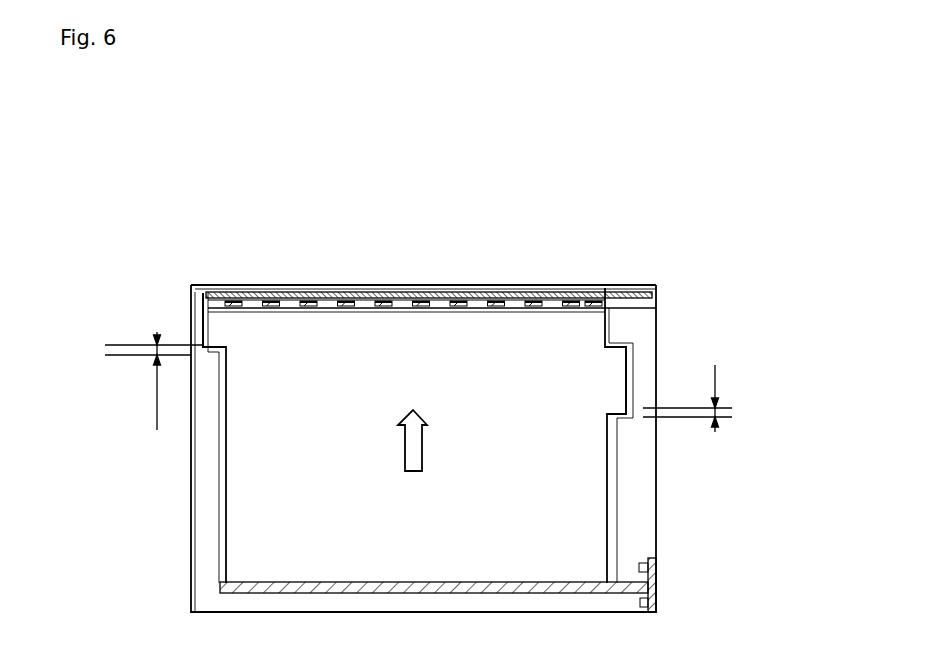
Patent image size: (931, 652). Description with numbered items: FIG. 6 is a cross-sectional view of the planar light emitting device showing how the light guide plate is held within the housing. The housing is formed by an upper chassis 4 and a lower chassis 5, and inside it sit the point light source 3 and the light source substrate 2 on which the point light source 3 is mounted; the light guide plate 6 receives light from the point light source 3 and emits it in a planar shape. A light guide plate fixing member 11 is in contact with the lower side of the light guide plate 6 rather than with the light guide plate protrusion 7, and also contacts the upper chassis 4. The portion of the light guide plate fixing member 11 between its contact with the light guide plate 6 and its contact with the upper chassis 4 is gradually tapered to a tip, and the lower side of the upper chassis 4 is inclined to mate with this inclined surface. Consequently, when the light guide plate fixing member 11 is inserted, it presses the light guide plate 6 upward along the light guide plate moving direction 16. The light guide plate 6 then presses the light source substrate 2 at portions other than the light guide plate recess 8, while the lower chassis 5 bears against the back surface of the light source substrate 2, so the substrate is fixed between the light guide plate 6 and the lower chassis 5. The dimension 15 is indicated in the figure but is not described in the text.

The light source substrate 2 is at (668, 289).
The point light source 3 is at (462, 288).
The upper chassis 4 is at (647, 323).
The lower chassis 5 is at (330, 279).
The light guide plate 6 is at (596, 490).
The light guide plate protrusion 7 is at (204, 321).
The light guide plate recess 8 is at (602, 293).
The light guide plate fixing member 11 is at (669, 588).
The gap 15 is at (425, 382).
The light guide plate moving direction 16 is at (443, 443).